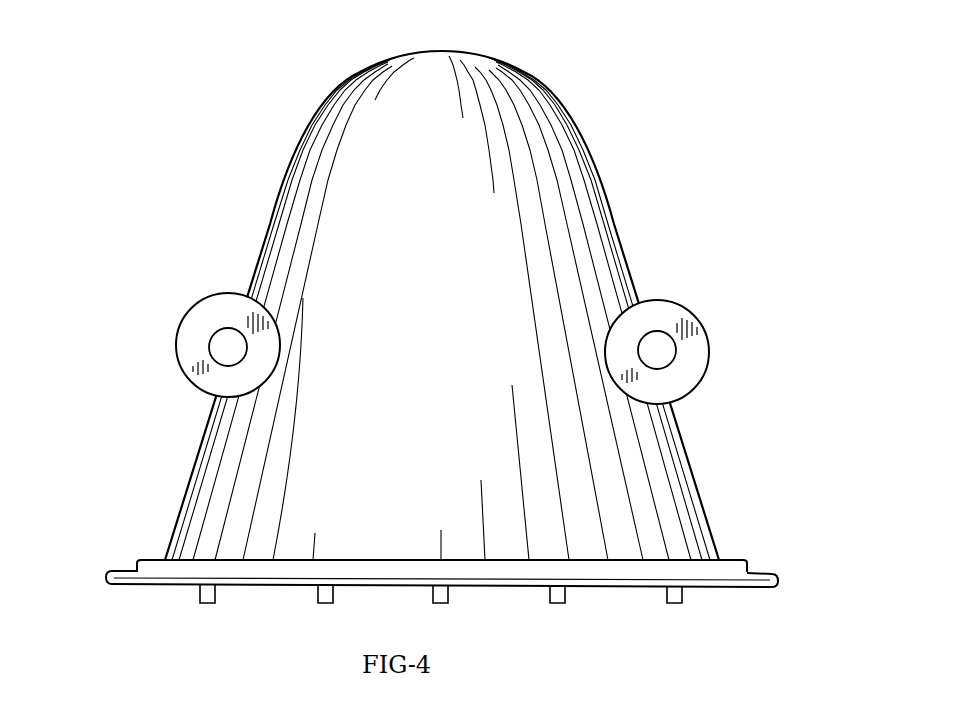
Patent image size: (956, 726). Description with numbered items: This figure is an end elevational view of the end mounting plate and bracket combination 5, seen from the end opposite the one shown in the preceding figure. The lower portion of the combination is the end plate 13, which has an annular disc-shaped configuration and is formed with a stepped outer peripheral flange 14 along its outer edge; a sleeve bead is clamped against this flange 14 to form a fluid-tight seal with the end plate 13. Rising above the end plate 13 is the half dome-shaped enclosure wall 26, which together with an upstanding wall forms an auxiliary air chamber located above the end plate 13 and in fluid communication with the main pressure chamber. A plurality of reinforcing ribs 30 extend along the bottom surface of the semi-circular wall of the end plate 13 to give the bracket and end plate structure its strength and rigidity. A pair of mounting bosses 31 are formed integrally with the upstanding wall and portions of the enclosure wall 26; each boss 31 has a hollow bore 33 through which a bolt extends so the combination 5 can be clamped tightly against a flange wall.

The end mounting plate and bracket combination 5 is at (632, 146).
The end plate 13 is at (362, 588).
The stepped outer peripheral flange 14 is at (122, 568).
The half dome-shaped enclosure wall 26 is at (302, 215).
The reinforcing ribs 30 is at (207, 604).
The mounting bosses 31 is at (218, 302).
The hollow bore 33 is at (218, 350).